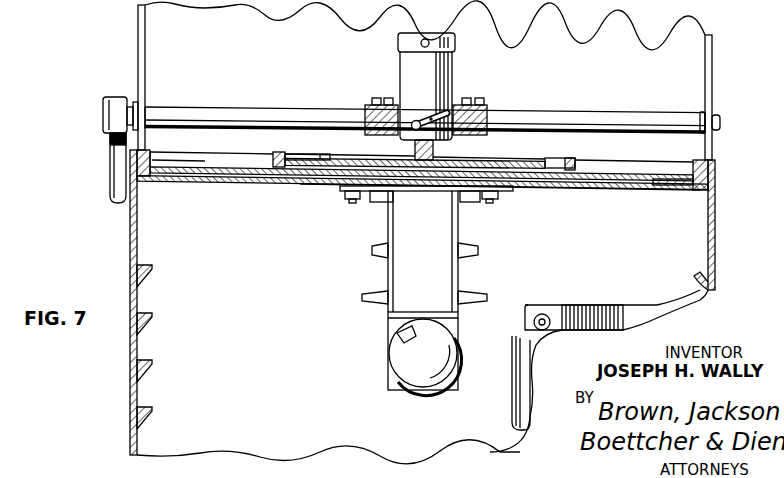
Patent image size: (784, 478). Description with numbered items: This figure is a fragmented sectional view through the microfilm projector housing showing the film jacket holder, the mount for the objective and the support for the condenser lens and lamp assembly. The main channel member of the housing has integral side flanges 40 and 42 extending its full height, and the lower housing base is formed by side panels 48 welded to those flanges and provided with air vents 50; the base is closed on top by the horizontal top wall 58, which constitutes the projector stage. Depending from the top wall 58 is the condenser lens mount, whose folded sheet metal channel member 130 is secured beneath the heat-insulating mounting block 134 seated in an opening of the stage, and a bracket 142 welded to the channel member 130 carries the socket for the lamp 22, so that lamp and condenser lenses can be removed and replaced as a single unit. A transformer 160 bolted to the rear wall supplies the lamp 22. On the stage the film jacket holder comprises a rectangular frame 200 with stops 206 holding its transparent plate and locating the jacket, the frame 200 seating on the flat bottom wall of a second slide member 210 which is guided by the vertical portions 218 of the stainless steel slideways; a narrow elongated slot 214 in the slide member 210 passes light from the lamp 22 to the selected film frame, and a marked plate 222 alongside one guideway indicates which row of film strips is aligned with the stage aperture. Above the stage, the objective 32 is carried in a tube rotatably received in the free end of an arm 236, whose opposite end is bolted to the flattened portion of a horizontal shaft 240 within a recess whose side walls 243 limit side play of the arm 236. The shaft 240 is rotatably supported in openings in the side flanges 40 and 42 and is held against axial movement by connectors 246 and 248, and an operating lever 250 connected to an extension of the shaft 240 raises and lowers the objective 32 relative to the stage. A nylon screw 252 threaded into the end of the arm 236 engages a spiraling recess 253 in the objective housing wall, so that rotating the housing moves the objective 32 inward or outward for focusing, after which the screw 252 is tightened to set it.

The lamp 22 is at (396, 346).
The objective 32 is at (464, 71).
The side flange 40 is at (712, 49).
The side flange 42 is at (138, 27).
The side panel 48 is at (130, 243).
The air vents 50 is at (150, 313).
The top wall 58 is at (575, 189).
The channel member 130 is at (393, 220).
The mounting block 134 is at (470, 200).
The bracket 142 is at (390, 385).
The transformer 160 is at (590, 305).
The frame 200 is at (570, 157).
The stops 206 is at (320, 152).
The slide member 210 is at (213, 166).
The slot 214 is at (404, 160).
The vertical portions 218 is at (143, 145).
The plate 222 is at (207, 175).
The arm 236 is at (478, 136).
The shaft 240 is at (235, 108).
The side walls 243 is at (365, 108).
The connectors 246 is at (712, 113).
The connectors 248 is at (143, 106).
The operating lever 250 is at (108, 97).
The nylon screw 252 is at (420, 122).
The recess 253 is at (428, 113).